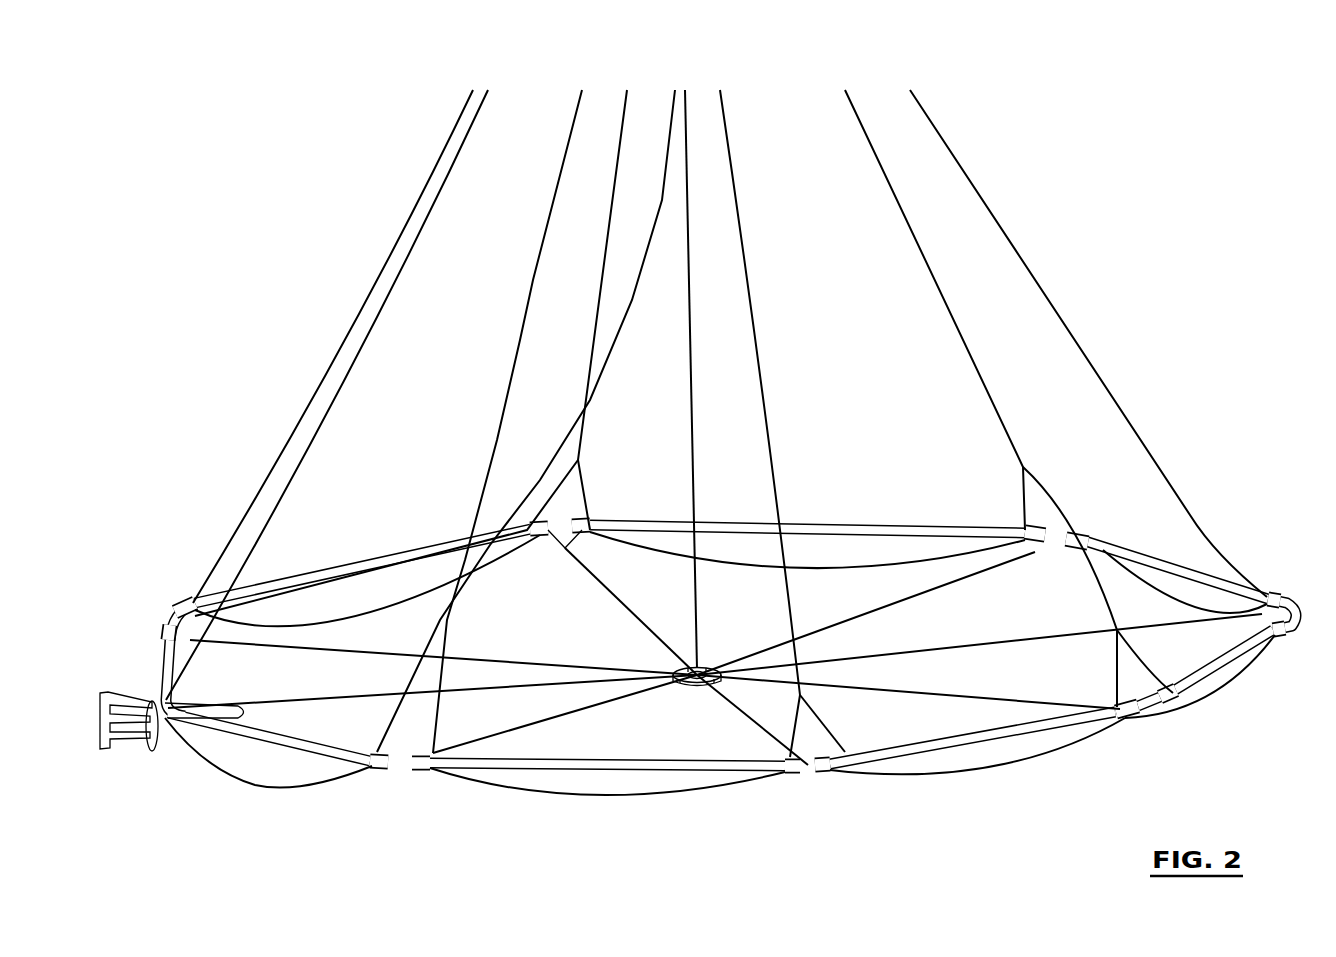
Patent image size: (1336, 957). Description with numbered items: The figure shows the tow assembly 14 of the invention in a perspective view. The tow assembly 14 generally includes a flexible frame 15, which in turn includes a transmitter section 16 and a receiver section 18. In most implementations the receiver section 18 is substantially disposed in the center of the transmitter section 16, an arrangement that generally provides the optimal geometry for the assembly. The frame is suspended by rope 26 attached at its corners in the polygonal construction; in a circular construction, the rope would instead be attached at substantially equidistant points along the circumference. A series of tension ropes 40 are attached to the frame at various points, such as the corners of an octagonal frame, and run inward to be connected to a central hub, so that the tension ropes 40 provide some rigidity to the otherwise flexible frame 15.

The tow assembly 14 is at (714, 497).
The flexible frame 15 is at (698, 714).
The transmitter section 16 is at (1025, 768).
The receiver section 18 is at (690, 683).
The rope 26 is at (257, 495).
The tension ropes 40 is at (495, 652).